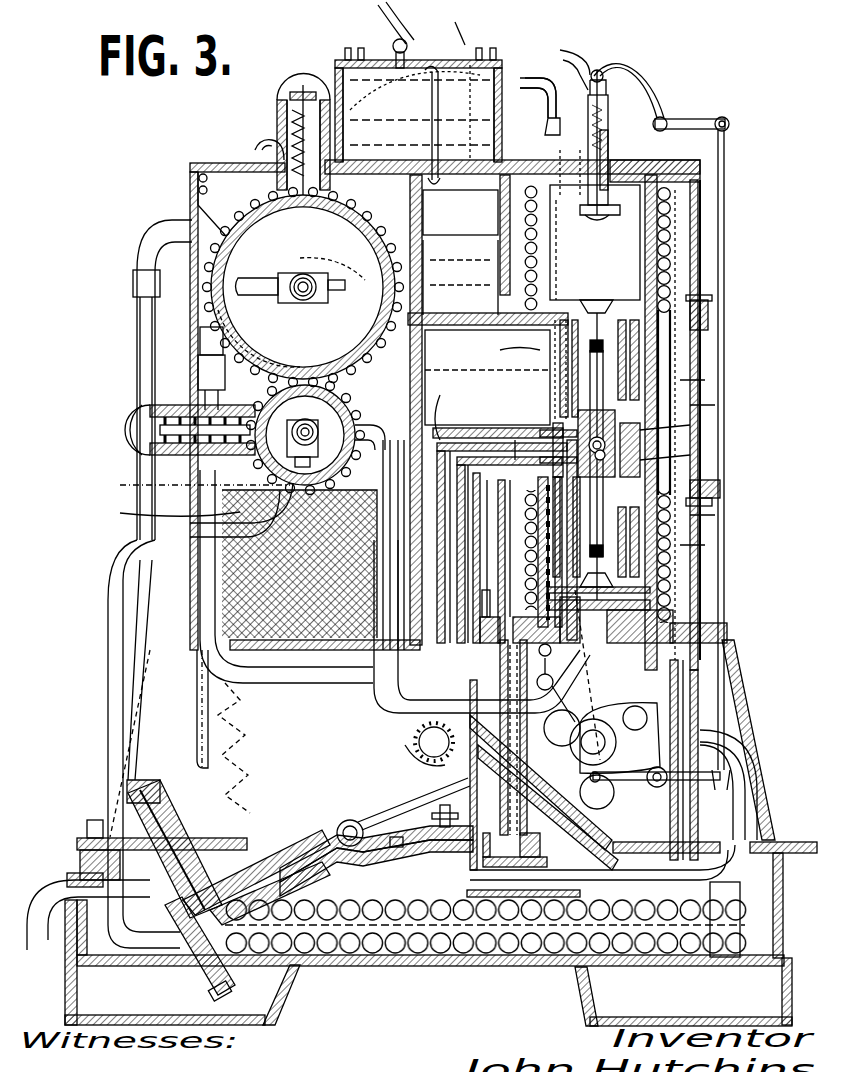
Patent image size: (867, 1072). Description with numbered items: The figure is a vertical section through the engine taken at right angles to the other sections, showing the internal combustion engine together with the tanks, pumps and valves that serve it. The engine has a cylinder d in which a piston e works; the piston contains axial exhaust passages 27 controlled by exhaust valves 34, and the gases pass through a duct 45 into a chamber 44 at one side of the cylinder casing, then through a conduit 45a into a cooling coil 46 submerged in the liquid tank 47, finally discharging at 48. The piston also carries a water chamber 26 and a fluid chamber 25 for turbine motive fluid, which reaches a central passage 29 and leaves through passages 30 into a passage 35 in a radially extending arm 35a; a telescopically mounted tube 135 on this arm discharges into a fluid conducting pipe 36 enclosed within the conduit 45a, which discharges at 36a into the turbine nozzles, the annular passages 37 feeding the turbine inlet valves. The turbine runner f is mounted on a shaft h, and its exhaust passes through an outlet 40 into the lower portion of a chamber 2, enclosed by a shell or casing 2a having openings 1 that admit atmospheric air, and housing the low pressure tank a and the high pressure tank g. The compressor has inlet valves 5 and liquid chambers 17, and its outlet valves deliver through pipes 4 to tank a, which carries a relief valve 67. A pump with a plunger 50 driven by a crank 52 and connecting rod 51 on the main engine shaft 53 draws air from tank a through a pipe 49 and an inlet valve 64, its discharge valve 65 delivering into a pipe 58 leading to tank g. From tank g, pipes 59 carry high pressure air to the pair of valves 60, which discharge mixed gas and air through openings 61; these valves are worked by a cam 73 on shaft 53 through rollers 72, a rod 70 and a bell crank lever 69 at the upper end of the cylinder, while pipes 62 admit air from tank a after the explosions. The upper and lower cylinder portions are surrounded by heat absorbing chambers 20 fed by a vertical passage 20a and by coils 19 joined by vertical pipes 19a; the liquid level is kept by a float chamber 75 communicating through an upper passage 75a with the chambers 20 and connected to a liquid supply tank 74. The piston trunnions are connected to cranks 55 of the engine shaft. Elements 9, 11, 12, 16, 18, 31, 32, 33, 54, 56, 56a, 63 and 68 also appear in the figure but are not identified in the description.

The openings 1 is at (258, 168).
The chamber 2 is at (211, 203).
The shell or casing 2a is at (135, 300).
The pipes 4 is at (287, 698).
The inlet valves 5 is at (272, 145).
The shaft 9 is at (421, 260).
The pipe 11 is at (742, 766).
The crank 12 is at (560, 695).
The handle 16 is at (396, 35).
The chambers of the compressor 17 is at (372, 68).
The inlet pipe 18 is at (534, 76).
The coils 19 is at (731, 613).
The vertical pipes 19a is at (726, 313).
The heat absorbing chambers 20 is at (668, 206).
The vertical passage 20a is at (440, 790).
The fluid chamber 25 is at (550, 360).
The water chamber 26 is at (556, 375).
The exhaust passages 27 is at (627, 353).
The central passage 29 is at (692, 408).
The passages 30 is at (550, 410).
The flange 31 is at (731, 490).
The rod 32 is at (692, 464).
The sleeve 33 is at (692, 436).
The exhaust valves 34 is at (606, 308).
The passage 35 is at (498, 421).
The radially extending arm 35a is at (446, 407).
The fluid conducting pipe 36 is at (405, 740).
The discharge of fluid conducting pipe 36a is at (735, 746).
The annular passages 37 is at (776, 815).
The outlet 40 is at (205, 652).
The chamber 44 is at (480, 410).
The duct 45 is at (508, 414).
The conduit 45a is at (428, 757).
The cooling coil 46 is at (737, 915).
The liquid tank 47 is at (398, 928).
The discharge 48 is at (33, 928).
The pipe 49 is at (138, 332).
The plunger 50 is at (340, 828).
The connecting rod 51 is at (385, 812).
The crank 52 is at (620, 732).
The main engine shaft 53 is at (660, 722).
The link 54 is at (700, 732).
The cranks 55 is at (762, 796).
The valve 56 is at (150, 422).
The valve 56a is at (240, 395).
The pipe 58 is at (112, 705).
The pipes 59 is at (388, 648).
The valves 60 is at (612, 158).
The openings 61 is at (592, 218).
The pipes 62 is at (335, 265).
The pipe 63 is at (333, 343).
The inlet valve 64 is at (215, 818).
The valve 65 is at (192, 985).
The relief valve 67 is at (285, 140).
The lever 68 is at (646, 105).
The bell crank lever 69 is at (693, 122).
The rod 70 is at (702, 281).
The rollers or projections 72 is at (590, 820).
The cam 73 is at (555, 835).
The liquid supply tank 74 is at (472, 68).
The chamber 75 is at (460, 277).
The upper passage 75a is at (500, 240).
The telescopically mounted tube 135 is at (465, 625).
The low pressure tank a is at (303, 287).
The cylinder d is at (676, 245).
The piston e is at (690, 380).
The runner f is at (230, 731).
The high pressure tank g is at (306, 438).
The shaft h is at (434, 742).